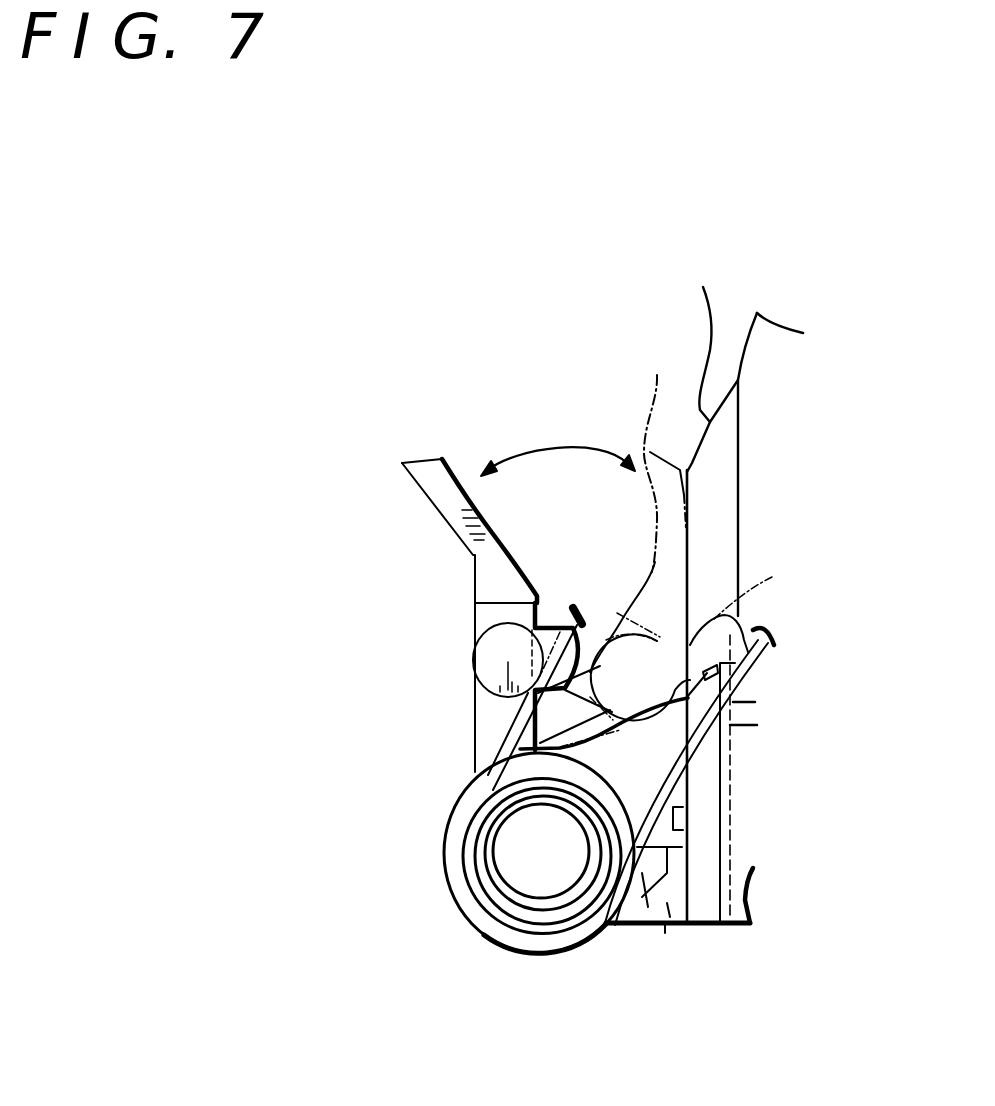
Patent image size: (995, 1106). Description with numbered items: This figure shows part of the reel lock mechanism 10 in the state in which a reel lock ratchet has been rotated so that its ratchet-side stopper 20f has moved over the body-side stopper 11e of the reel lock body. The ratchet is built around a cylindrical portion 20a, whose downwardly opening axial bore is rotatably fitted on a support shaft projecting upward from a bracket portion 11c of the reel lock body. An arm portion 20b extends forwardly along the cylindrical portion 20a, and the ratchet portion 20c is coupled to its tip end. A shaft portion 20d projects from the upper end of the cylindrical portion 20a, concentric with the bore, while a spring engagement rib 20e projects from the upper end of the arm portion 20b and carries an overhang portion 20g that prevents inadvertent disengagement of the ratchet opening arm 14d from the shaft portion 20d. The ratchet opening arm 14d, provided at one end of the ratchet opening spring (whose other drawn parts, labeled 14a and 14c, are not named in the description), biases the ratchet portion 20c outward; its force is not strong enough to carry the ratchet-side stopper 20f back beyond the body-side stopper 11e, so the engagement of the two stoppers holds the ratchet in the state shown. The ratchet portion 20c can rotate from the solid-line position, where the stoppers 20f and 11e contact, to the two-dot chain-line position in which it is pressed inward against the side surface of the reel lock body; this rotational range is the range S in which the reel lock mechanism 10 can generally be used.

The reel lock mechanism 10 is at (720, 278).
The ratchet portion 20c is at (443, 480).
The range S is at (553, 446).
The arm portion 20b is at (480, 628).
The spring engagement rib 20e is at (537, 720).
The ratchet opening arm 14d is at (535, 746).
The spring arm 14c is at (690, 748).
The overhang portion 20g is at (578, 637).
The body-side stopper 11e is at (678, 823).
The spring coil portion 14a is at (463, 857).
The shaft portion 20d is at (517, 868).
The cylindrical portion 20a is at (500, 947).
The ratchet-side stopper 20f is at (640, 930).
The bracket portion 11c is at (665, 933).